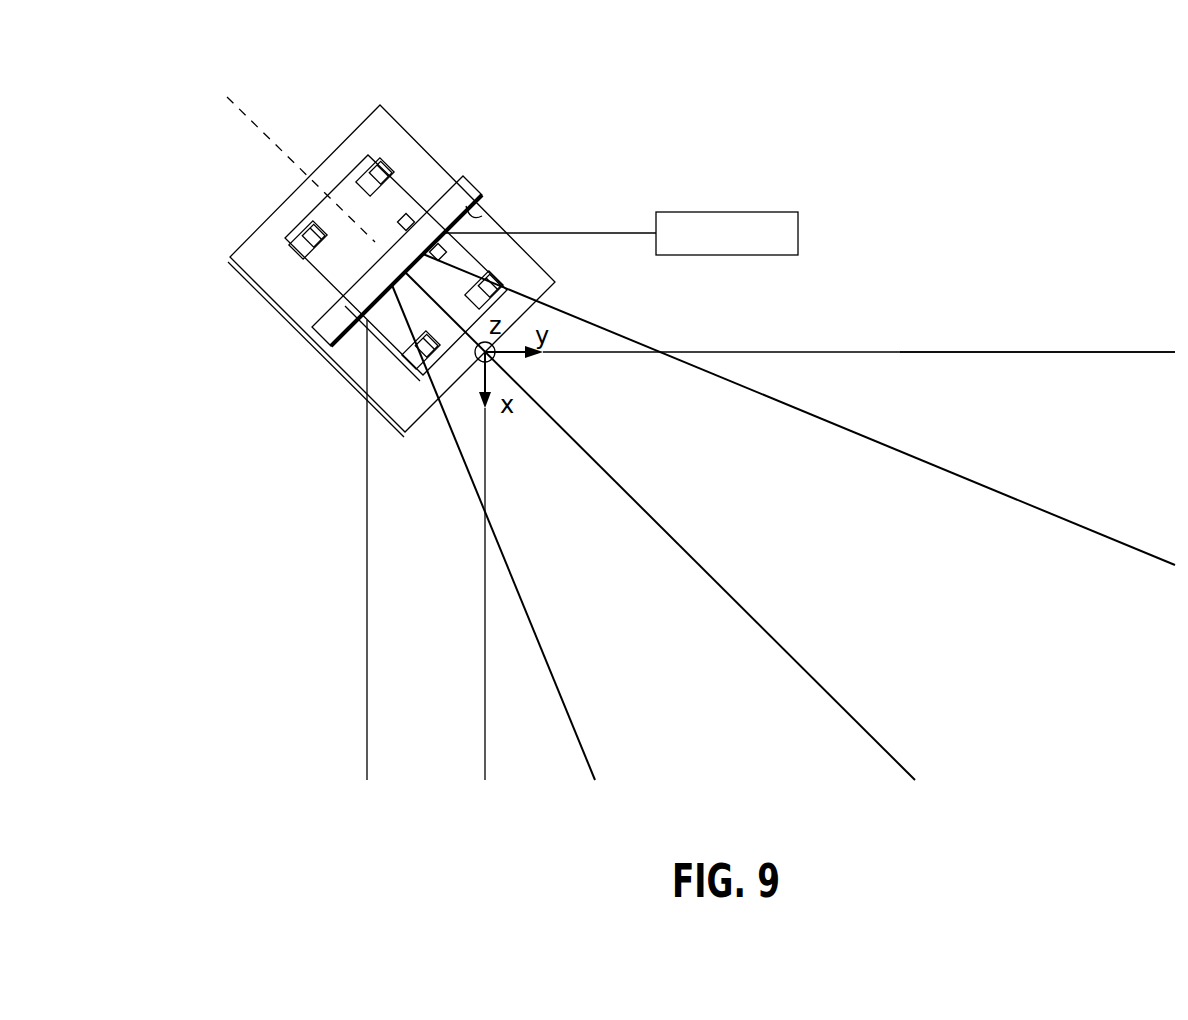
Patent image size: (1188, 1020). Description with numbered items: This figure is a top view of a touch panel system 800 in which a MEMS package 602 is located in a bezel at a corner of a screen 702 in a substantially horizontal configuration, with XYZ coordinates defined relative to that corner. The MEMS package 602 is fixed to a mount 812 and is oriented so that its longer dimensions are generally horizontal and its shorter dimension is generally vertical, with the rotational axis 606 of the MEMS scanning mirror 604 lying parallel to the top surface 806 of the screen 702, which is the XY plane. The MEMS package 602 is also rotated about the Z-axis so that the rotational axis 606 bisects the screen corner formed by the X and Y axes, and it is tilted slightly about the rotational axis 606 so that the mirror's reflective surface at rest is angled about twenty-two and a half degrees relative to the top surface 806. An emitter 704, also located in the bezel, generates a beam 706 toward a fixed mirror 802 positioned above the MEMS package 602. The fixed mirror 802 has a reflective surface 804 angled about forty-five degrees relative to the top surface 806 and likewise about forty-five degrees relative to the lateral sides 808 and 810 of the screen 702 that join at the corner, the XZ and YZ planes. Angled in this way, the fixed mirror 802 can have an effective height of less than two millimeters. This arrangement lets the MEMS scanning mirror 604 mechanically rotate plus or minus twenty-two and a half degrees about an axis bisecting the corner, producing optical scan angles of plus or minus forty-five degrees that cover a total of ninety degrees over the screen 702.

The touch panel system 800 is at (166, 91).
The mount 812 is at (253, 250).
The rotational axis 606 is at (252, 123).
The MEMS package 602 is at (345, 197).
The fixed mirror 802 is at (468, 193).
The MEMS scanning mirror 604 is at (400, 213).
The reflective surface 804 is at (466, 218).
The beam 706 is at (595, 232).
The emitter 704 is at (719, 212).
The lateral side 810 is at (870, 352).
The screen 702 is at (1018, 385).
The top surface 806 is at (1100, 442).
The lateral side 808 is at (485, 592).